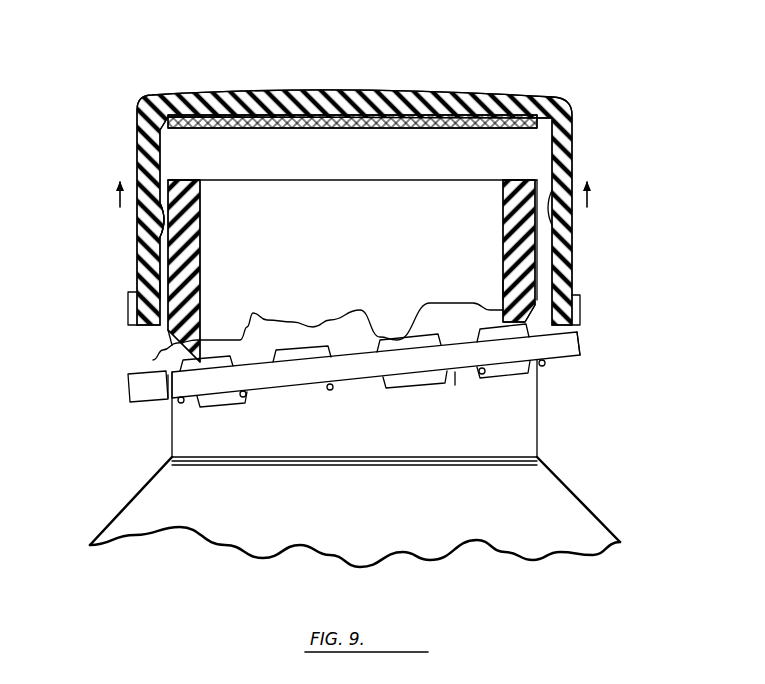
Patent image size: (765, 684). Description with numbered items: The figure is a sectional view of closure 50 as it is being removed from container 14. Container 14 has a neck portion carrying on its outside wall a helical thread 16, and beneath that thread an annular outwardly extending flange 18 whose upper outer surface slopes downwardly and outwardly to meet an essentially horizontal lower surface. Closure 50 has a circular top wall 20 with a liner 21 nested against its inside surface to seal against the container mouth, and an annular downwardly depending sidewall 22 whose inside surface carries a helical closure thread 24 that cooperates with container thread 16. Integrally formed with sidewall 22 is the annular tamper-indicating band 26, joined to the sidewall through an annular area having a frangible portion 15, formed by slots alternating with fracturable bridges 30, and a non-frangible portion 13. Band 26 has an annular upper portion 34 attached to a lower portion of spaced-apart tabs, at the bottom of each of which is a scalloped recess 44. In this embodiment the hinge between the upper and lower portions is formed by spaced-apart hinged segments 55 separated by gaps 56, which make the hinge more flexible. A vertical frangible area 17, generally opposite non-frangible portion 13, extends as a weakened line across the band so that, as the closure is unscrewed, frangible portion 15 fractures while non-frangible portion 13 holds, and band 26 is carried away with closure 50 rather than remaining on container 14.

The non-frangible portion 13 is at (580, 340).
The container 14 is at (533, 510).
The frangible portion 15 is at (512, 287).
The helical thread 16 is at (163, 292).
The vertical frangible area 17 is at (158, 380).
The annular outwardly extending flange 18 is at (167, 360).
The circular top wall 20 is at (367, 100).
The liner 21 is at (348, 130).
The annular downwardly depending sidewall 22 is at (556, 273).
The helical closure thread 24 is at (163, 224).
The annular tamper-indicating band 26 is at (125, 388).
The fracturable bridges 30 is at (162, 327).
The annular upper portion 34 is at (260, 373).
The scalloped recess 44 is at (247, 335).
The closure 50 is at (596, 66).
The hinged segments 55 is at (158, 403).
The gaps 56 is at (462, 372).